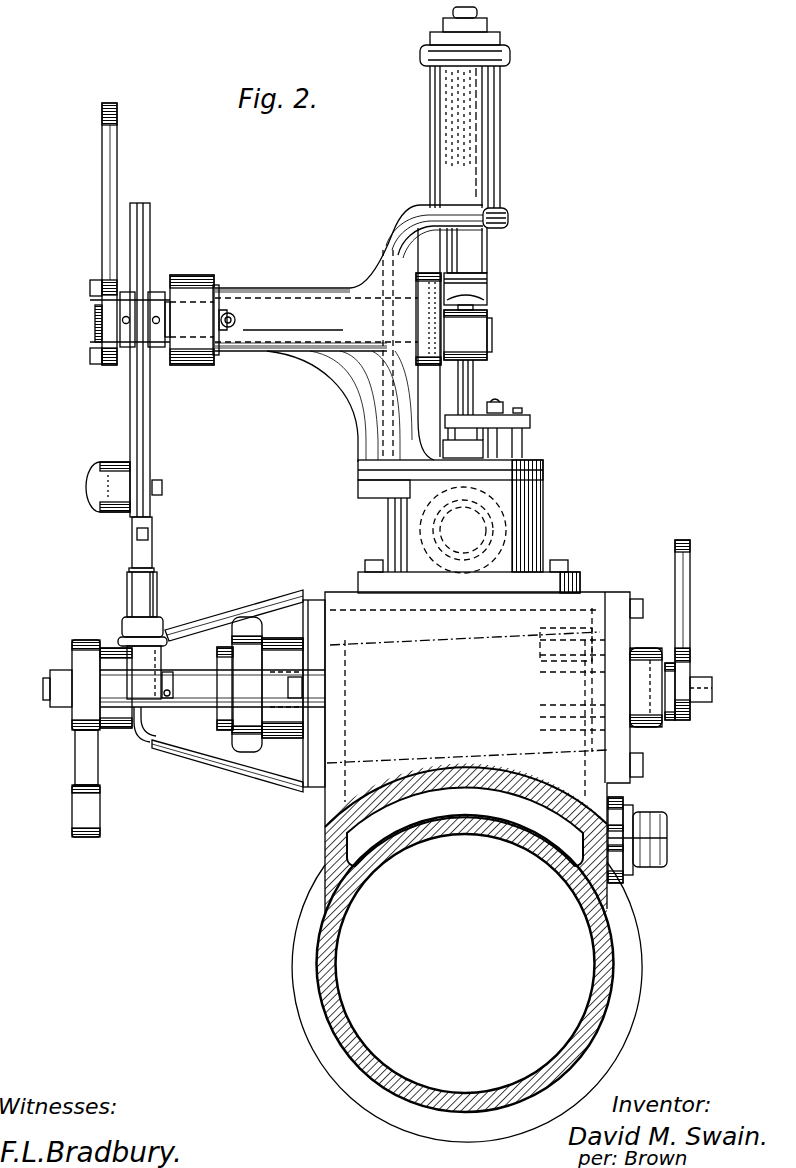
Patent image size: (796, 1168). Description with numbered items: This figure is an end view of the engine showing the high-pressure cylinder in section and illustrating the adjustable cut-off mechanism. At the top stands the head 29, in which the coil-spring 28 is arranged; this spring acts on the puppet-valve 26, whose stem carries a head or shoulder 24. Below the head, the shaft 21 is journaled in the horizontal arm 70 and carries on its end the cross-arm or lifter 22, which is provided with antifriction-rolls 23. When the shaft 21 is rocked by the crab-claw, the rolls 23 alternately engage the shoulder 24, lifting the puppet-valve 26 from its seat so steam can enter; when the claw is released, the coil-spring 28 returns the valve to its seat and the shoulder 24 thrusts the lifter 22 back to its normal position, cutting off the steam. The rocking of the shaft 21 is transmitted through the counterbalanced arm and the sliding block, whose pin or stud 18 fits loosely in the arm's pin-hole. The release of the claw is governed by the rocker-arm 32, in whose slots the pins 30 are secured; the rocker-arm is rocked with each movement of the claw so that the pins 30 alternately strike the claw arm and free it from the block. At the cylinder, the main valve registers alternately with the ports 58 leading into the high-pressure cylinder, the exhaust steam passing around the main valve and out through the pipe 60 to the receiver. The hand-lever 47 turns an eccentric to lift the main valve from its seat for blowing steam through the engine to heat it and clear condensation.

The pin or stud 18 is at (233, 322).
The shaft 21 is at (166, 300).
The cross-arm or lifter 22 is at (417, 278).
The antifriction-rolls 23 is at (470, 329).
The head or shoulder 24 is at (478, 296).
The puppet-valve 26 is at (473, 383).
The coil-spring 28 is at (468, 110).
The head 29 is at (493, 177).
The pins 30 is at (153, 287).
The rocker-arm 32 is at (113, 182).
The hand-lever 47 is at (683, 618).
The ports 58 is at (493, 812).
The pipe 60 is at (652, 838).
The horizontal arm 70 is at (316, 375).